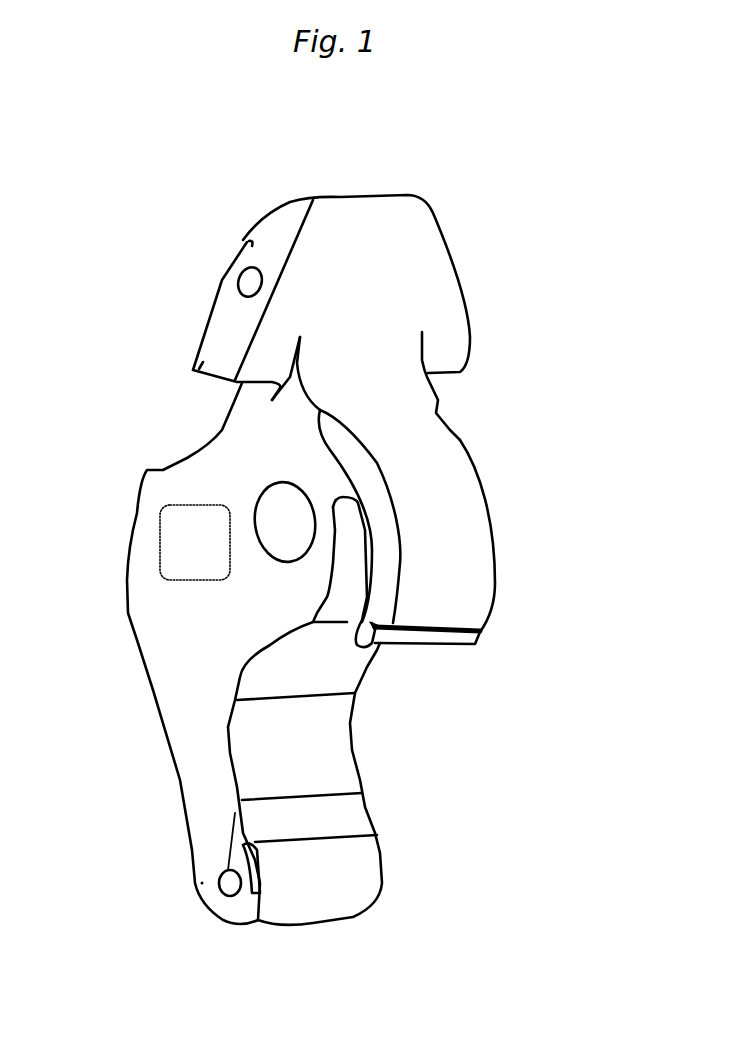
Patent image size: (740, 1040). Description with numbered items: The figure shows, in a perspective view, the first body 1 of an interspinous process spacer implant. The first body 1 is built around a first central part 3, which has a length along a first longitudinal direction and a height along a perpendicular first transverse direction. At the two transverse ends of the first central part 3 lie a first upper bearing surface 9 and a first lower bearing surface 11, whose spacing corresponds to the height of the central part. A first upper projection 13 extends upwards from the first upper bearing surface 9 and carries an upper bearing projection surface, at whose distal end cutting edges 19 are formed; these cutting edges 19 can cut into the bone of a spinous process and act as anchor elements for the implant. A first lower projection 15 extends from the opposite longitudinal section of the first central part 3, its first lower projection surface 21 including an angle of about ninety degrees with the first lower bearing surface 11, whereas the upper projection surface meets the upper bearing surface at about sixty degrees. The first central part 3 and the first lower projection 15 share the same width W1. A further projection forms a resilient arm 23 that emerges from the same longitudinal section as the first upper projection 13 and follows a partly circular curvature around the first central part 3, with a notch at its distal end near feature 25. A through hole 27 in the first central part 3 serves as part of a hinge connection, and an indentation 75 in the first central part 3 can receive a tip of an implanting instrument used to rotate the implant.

The first body 1 is at (62, 296).
The first central part 3 is at (187, 492).
The first upper bearing surface 9 is at (194, 450).
The first lower bearing surface 11 is at (340, 678).
The first upper projection 13 is at (422, 268).
The first lower projection 15 is at (208, 805).
The cutting edges 19 is at (222, 277).
The first lower projection surface 21 is at (348, 780).
The resilient arm 23 is at (472, 528).
The plate 25 is at (480, 633).
The through hole 27 is at (288, 535).
The indentation 75 is at (187, 550).
The width W1 is at (350, 756).